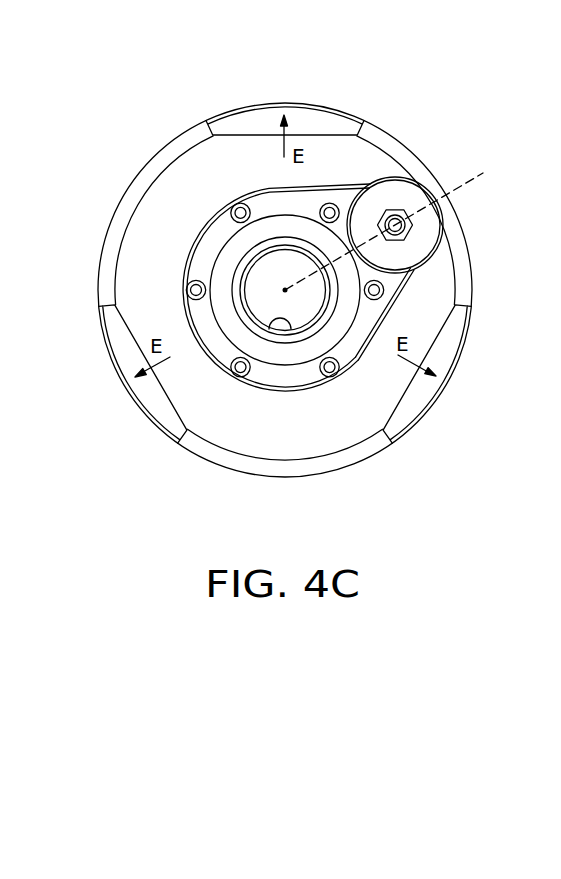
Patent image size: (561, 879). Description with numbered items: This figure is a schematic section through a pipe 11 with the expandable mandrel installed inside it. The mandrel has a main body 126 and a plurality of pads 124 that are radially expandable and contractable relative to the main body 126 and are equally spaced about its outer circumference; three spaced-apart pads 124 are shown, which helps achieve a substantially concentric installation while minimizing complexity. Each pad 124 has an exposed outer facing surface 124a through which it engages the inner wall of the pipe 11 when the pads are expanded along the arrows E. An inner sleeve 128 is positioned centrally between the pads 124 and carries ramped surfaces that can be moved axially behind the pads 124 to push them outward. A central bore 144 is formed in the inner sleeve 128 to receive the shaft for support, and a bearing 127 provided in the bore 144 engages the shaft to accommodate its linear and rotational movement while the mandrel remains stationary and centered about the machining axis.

The pipe 11 is at (412, 150).
The pads 124 is at (308, 120).
The outer facing surface 124a is at (245, 103).
The main body 126 is at (190, 195).
The bearing 127 is at (296, 323).
The inner sleeve 128 is at (262, 377).
The central bore 144 is at (300, 295).